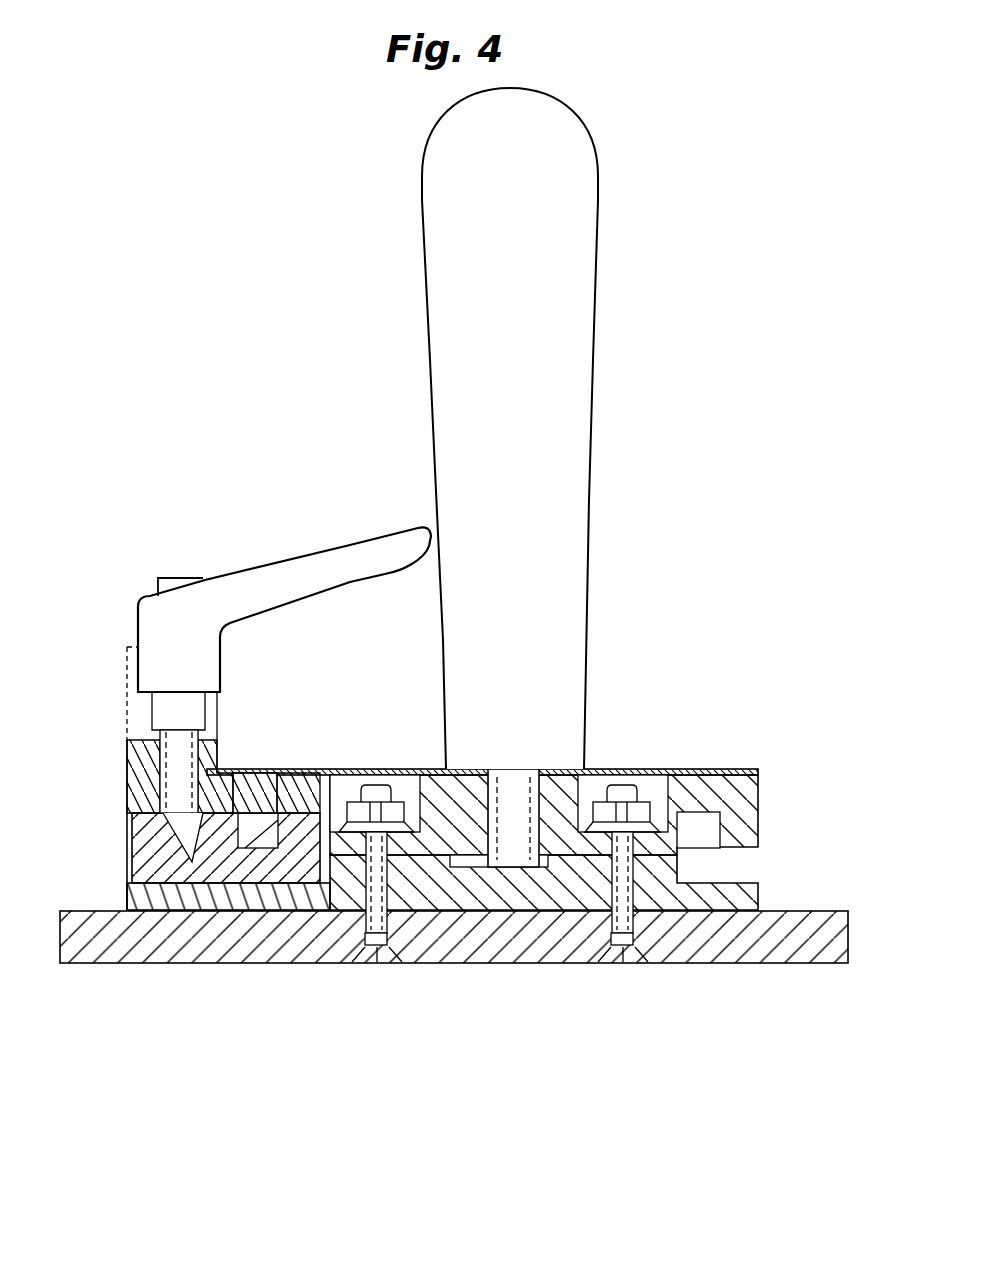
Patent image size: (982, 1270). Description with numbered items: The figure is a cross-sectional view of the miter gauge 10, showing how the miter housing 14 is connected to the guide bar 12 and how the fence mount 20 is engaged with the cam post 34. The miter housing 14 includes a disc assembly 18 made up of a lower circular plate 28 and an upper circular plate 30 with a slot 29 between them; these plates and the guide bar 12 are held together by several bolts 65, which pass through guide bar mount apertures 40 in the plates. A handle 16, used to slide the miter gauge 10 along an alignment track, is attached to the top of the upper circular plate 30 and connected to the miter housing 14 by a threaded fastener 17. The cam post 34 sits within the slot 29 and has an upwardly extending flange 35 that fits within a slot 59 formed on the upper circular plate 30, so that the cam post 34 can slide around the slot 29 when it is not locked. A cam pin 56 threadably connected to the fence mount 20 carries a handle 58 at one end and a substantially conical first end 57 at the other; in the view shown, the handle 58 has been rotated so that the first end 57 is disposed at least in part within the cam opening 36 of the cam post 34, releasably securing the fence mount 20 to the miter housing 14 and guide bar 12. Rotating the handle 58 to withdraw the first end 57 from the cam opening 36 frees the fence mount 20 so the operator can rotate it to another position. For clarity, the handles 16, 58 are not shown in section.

The miter gauge 10 is at (318, 230).
The guide bar 12 is at (778, 965).
The miter housing 14 is at (598, 735).
The handle 16 is at (588, 315).
The threaded fastener 17 is at (515, 847).
The disc assembly 18 is at (758, 788).
The fence mount 20 is at (127, 697).
The lower circular plate 28 is at (760, 893).
The slot 29 is at (300, 880).
The upper circular plate 30 is at (750, 817).
The cam post 34 is at (190, 885).
The upwardly extending flange 35 is at (258, 885).
The cam opening 36 is at (185, 852).
The guide bar mount apertures 40 is at (397, 783).
The cam pin 56 is at (200, 773).
The first end 57 is at (178, 838).
The handle 58 is at (340, 550).
The slot 59 is at (397, 782).
The bolts 65 is at (397, 925).